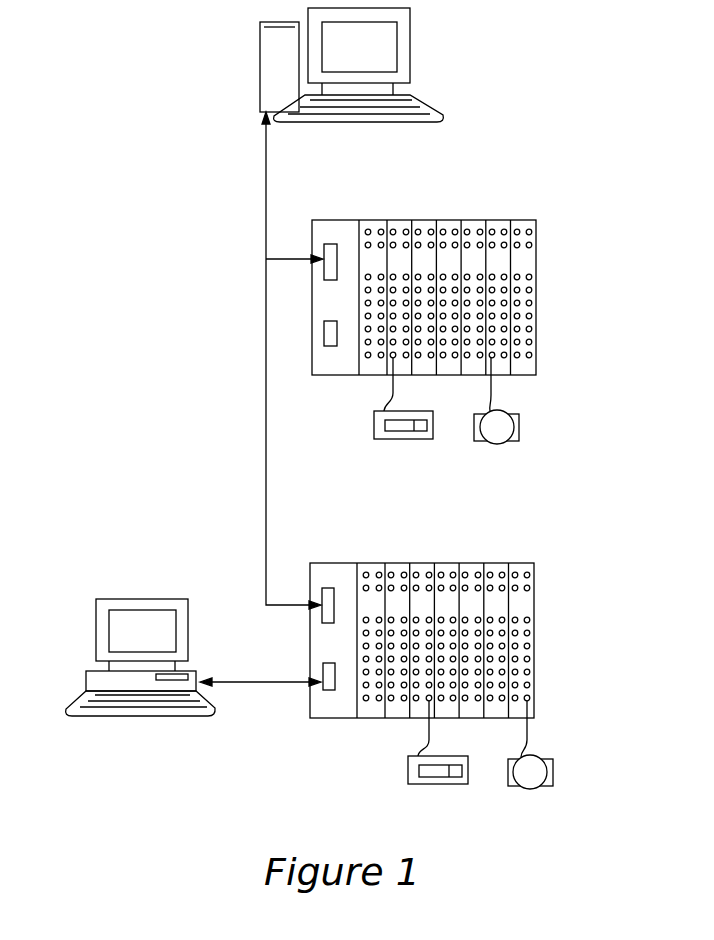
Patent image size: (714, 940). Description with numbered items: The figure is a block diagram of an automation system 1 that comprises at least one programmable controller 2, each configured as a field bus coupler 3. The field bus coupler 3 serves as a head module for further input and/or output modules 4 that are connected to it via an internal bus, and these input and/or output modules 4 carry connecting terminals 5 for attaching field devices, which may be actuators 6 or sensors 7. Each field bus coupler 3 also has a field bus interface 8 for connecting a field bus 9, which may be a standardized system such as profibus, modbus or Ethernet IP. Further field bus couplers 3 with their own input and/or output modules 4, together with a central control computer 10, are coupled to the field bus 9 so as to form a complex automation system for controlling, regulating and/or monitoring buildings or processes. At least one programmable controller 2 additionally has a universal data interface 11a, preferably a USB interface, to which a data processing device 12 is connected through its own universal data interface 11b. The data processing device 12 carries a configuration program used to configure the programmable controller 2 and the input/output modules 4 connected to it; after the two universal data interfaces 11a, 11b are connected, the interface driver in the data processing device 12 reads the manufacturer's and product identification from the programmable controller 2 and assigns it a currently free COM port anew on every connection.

The automation system 1 is at (174, 224).
The programmable controller 2 is at (442, 483).
The field bus coupler 3 is at (318, 376).
The input and/or output modules 4 is at (497, 221).
The connecting terminals 5 is at (530, 342).
The actuator 6 is at (519, 432).
The sensor 7 is at (374, 427).
The field bus interface 8 is at (332, 244).
The field bus 9 is at (266, 452).
The central control computer 10 is at (260, 52).
The universal data interface 11a is at (324, 690).
The universal data interface 11b is at (196, 663).
The data processing device 12 is at (118, 599).